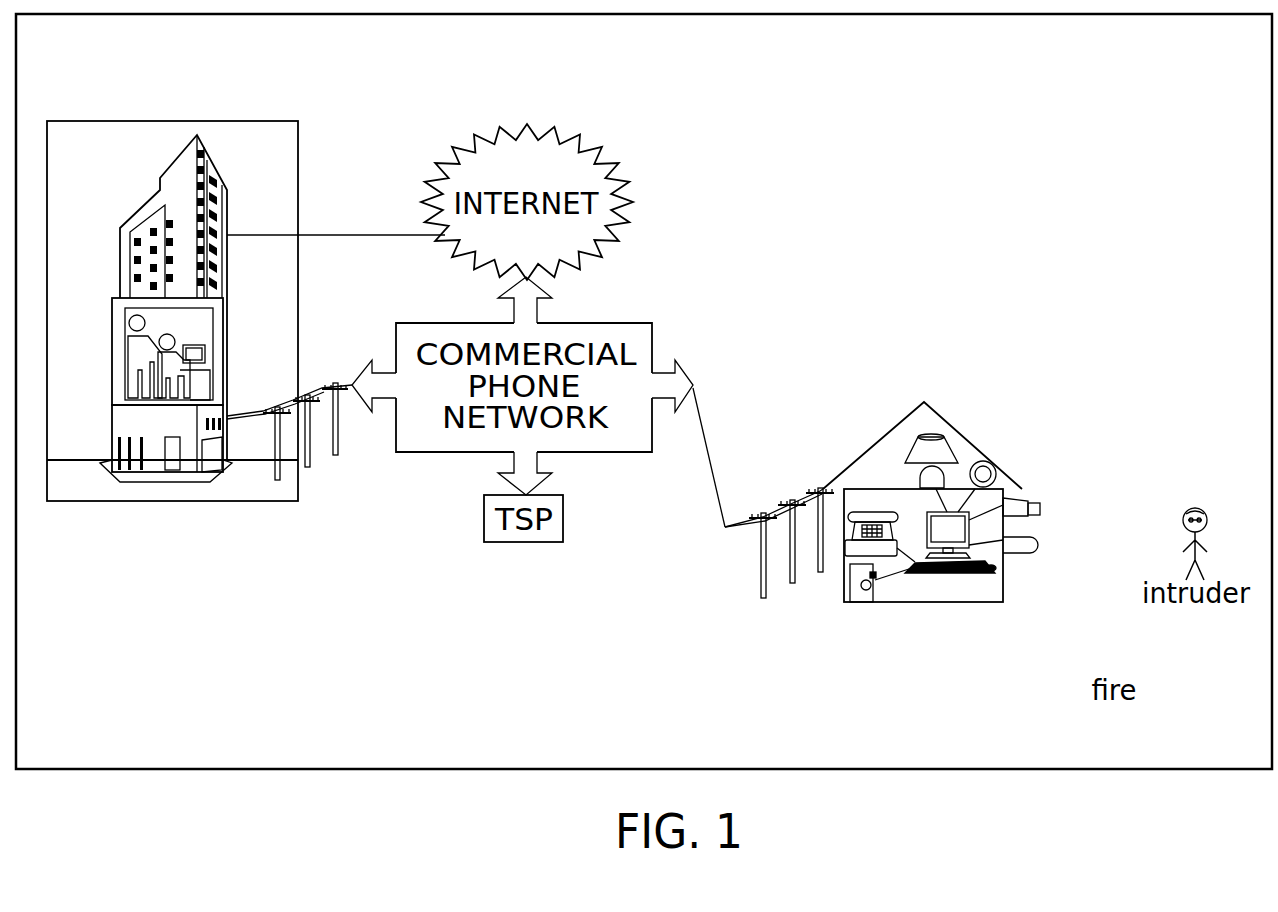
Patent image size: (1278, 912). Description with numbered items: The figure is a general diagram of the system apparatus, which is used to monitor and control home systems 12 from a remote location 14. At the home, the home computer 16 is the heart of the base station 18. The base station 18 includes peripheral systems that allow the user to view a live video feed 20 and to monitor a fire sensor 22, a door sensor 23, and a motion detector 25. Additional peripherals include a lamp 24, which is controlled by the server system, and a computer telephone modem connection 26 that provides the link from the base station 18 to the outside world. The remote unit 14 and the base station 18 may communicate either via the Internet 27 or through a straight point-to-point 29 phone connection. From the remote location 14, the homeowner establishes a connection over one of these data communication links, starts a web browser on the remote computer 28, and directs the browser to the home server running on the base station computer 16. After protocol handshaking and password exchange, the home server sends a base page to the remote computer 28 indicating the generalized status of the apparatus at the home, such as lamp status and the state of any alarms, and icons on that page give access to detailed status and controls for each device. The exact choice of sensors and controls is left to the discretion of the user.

The home systems 12 is at (927, 580).
The remote location 14 is at (172, 339).
The home computer 16 is at (971, 575).
The base station 18 is at (922, 537).
The live video feed 20 is at (1041, 507).
The fire sensor 22 is at (991, 459).
The door sensor 23 is at (874, 594).
The lamp 24 is at (941, 432).
The motion detector 25 is at (1029, 557).
The computer telephone modem connection 26 is at (909, 543).
The Internet 27 is at (336, 214).
The remote computer 28 is at (289, 377).
The point-to-point phone connection 29 is at (348, 374).